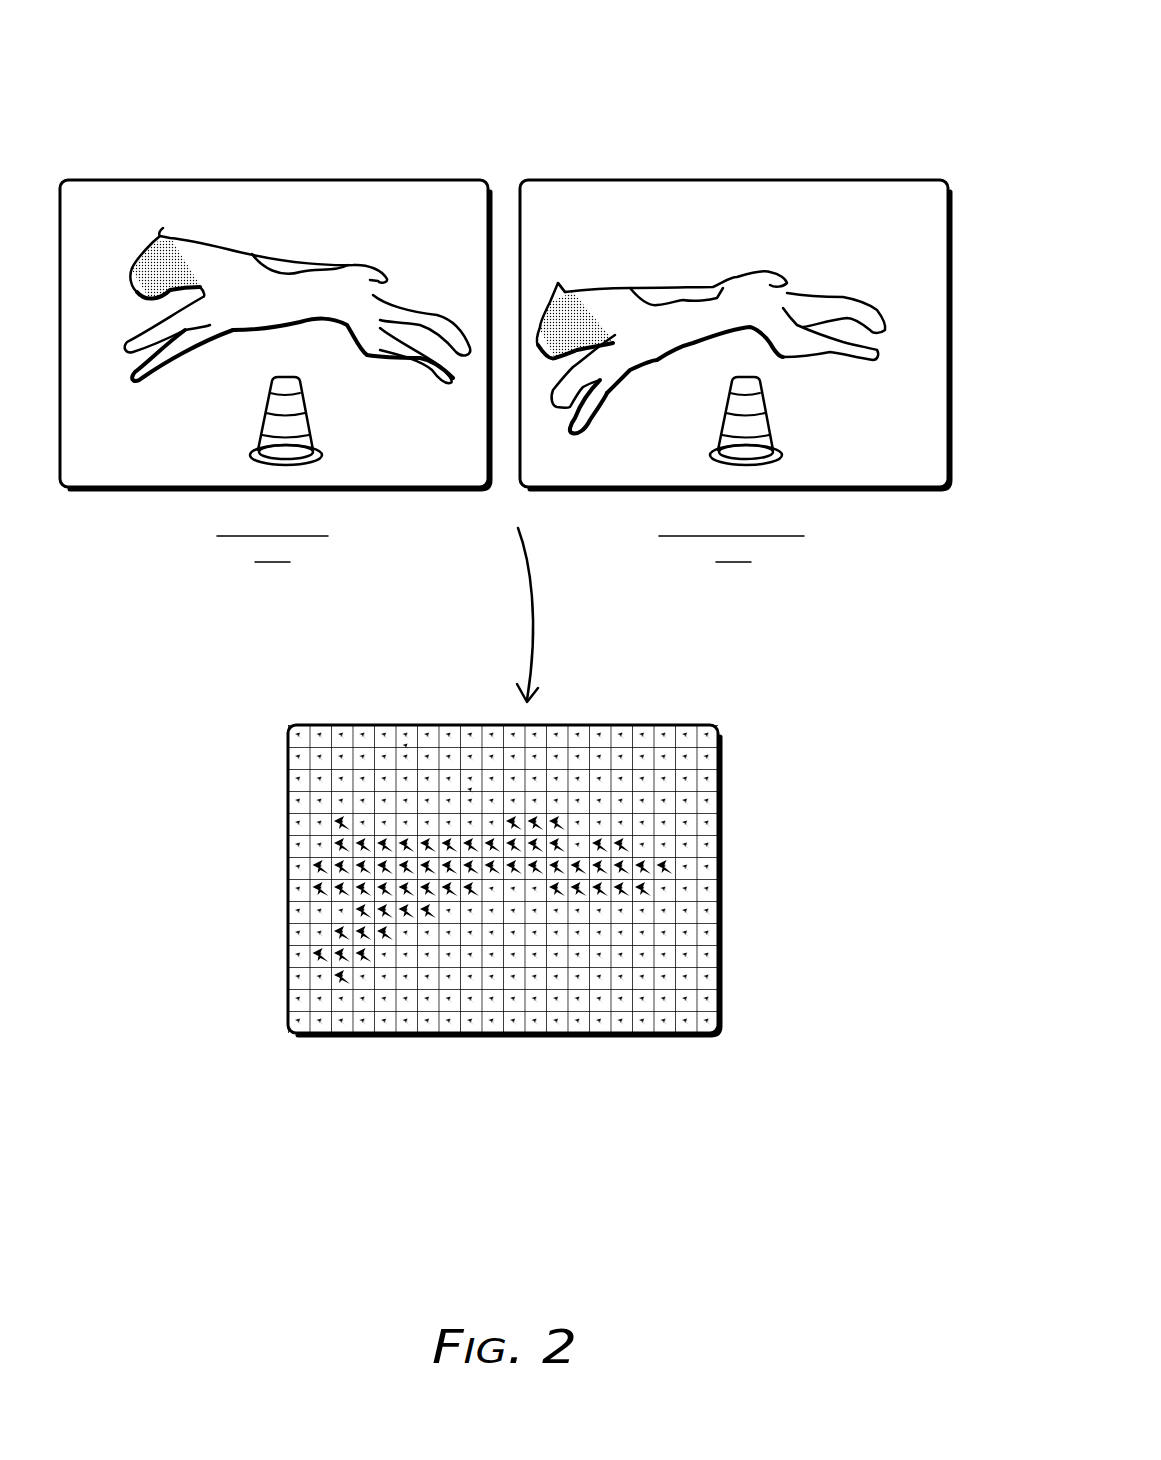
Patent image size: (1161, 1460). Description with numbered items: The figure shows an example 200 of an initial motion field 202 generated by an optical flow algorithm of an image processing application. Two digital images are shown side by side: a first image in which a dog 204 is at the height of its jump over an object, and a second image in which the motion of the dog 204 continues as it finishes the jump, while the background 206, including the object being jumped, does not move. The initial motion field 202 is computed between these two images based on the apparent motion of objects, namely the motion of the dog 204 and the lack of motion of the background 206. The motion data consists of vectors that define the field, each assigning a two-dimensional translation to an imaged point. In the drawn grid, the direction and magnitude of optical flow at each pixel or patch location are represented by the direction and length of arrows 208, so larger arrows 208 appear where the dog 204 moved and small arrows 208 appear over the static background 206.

The example 200 is at (731, 79).
The initial motion field 202 is at (612, 692).
The dog 204 is at (312, 262).
The background 206 is at (129, 456).
The arrows 208 is at (467, 773).